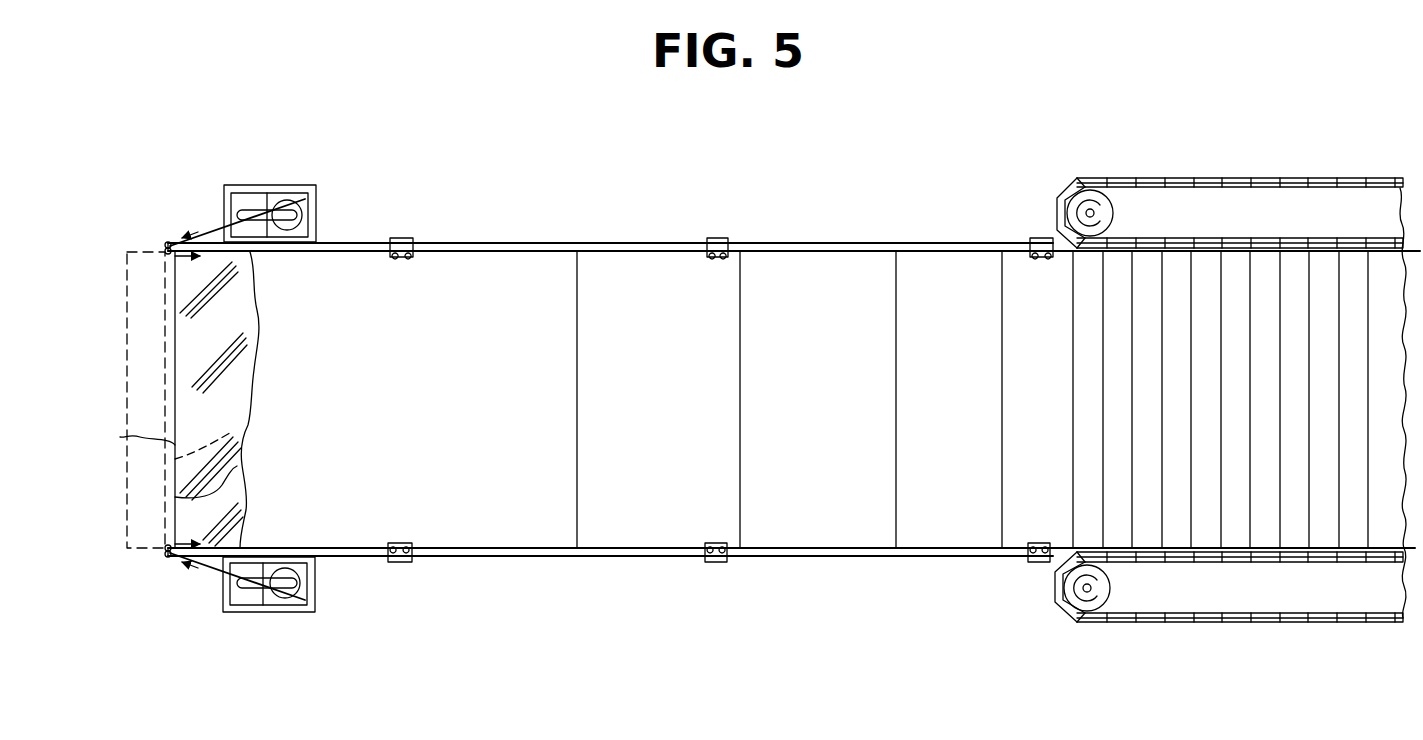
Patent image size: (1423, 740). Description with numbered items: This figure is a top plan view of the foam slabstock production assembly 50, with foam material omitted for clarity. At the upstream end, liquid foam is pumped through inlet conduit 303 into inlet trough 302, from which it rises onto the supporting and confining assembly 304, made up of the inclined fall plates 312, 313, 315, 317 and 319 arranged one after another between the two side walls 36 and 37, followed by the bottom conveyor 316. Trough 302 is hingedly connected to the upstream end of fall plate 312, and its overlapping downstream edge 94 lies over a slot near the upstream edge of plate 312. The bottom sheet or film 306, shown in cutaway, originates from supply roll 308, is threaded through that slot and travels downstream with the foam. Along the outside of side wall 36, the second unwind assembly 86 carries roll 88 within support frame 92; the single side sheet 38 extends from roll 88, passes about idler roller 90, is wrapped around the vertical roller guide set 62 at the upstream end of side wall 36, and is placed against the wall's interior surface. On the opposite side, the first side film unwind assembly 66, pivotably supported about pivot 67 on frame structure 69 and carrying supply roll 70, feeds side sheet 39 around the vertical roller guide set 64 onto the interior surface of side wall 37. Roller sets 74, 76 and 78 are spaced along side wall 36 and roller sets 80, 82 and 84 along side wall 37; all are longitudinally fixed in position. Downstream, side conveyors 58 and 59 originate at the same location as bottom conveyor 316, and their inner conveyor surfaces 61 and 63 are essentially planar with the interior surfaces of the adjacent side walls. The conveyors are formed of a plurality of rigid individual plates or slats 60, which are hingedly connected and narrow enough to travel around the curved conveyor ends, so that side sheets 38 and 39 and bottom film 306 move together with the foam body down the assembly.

The side wall 36 is at (623, 243).
The side wall 37 is at (545, 556).
The side sheet 38 is at (226, 222).
The side sheet 39 is at (222, 578).
The foam slabstock production assembly 50 is at (822, 571).
The side conveyor 58 is at (1185, 178).
The side conveyor 59 is at (1141, 623).
The plates or slats 60 is at (1260, 178).
The inner conveyor surface 61 is at (1280, 251).
The vertical roller guide set 62 is at (166, 247).
The inner conveyor surface 63 is at (1275, 550).
The vertical roller guide set 64 is at (172, 558).
The side film unwind assembly 66 is at (280, 600).
The pivot 67 is at (263, 600).
The frame structure 69 is at (315, 598).
The supply roll 70 is at (305, 578).
The roller set 74 is at (418, 238).
The roller set 76 is at (727, 242).
The roller set 78 is at (1030, 243).
The roller set 80 is at (412, 557).
The roller set 82 is at (727, 558).
The roller set 84 is at (1028, 560).
The second unwind assembly 86 is at (270, 195).
The roll 88 is at (307, 203).
The idler roller 90 is at (247, 208).
The support frame 92 is at (312, 185).
The downstream edge 94 is at (237, 466).
The inlet trough 302 is at (233, 431).
The inlet conduit 303 is at (125, 398).
The supporting and confining assembly 304 is at (465, 270).
The bottom sheet or film 306 is at (245, 340).
The supply roll 308 is at (120, 437).
The fall plate 312 is at (483, 397).
The fall plate 313 is at (624, 397).
The fall plate 315 is at (787, 397).
The bottom conveyor 316 is at (1228, 360).
The fall plate 317 is at (928, 397).
The fall plate 319 is at (1018, 397).